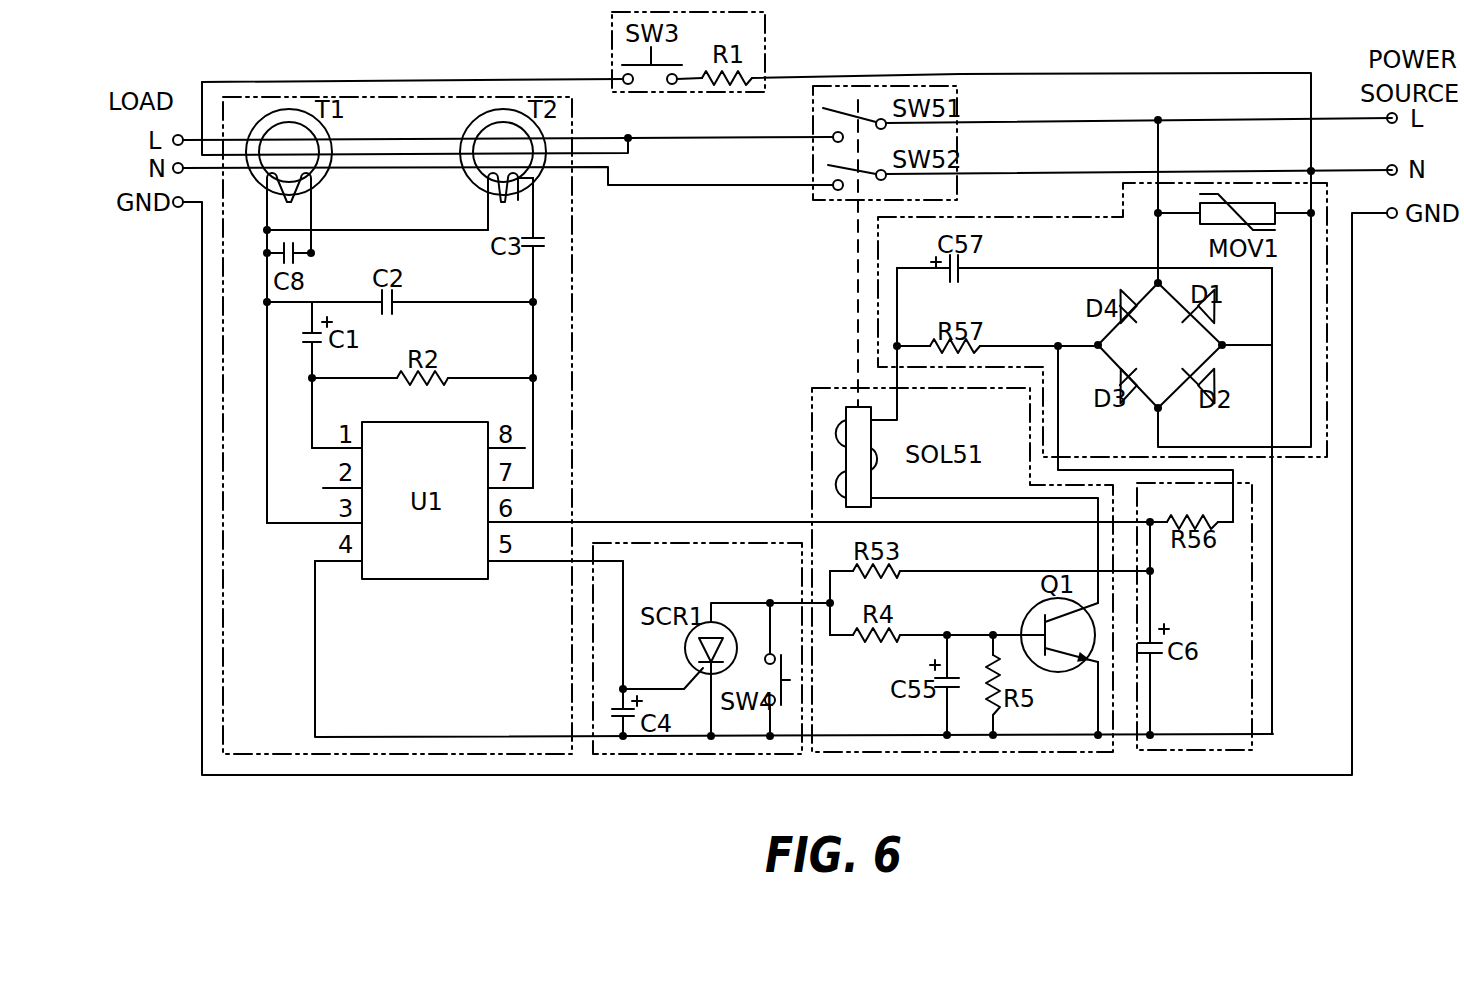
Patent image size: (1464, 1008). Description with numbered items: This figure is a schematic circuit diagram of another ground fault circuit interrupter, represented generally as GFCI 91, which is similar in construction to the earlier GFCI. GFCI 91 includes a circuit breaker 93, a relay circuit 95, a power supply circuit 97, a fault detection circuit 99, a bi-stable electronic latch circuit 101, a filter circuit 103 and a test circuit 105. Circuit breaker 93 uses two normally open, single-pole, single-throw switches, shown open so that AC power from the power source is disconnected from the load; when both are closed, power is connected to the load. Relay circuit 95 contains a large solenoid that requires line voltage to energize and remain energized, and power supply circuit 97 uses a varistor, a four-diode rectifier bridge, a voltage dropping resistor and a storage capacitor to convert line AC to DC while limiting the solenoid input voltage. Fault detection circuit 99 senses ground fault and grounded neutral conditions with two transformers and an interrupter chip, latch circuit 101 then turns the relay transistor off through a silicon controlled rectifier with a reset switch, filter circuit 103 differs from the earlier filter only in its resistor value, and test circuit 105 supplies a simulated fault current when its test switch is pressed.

The ground fault circuit interrupter 91 is at (316, 796).
The circuit breaker 93 is at (957, 101).
The relay circuit 95 is at (812, 412).
The power supply circuit 97 is at (1305, 457).
The fault detection circuit 99 is at (462, 754).
The bi-stable electronic latch circuit 101 is at (637, 754).
The filter circuit 103 is at (1252, 681).
The test circuit 105 is at (765, 52).